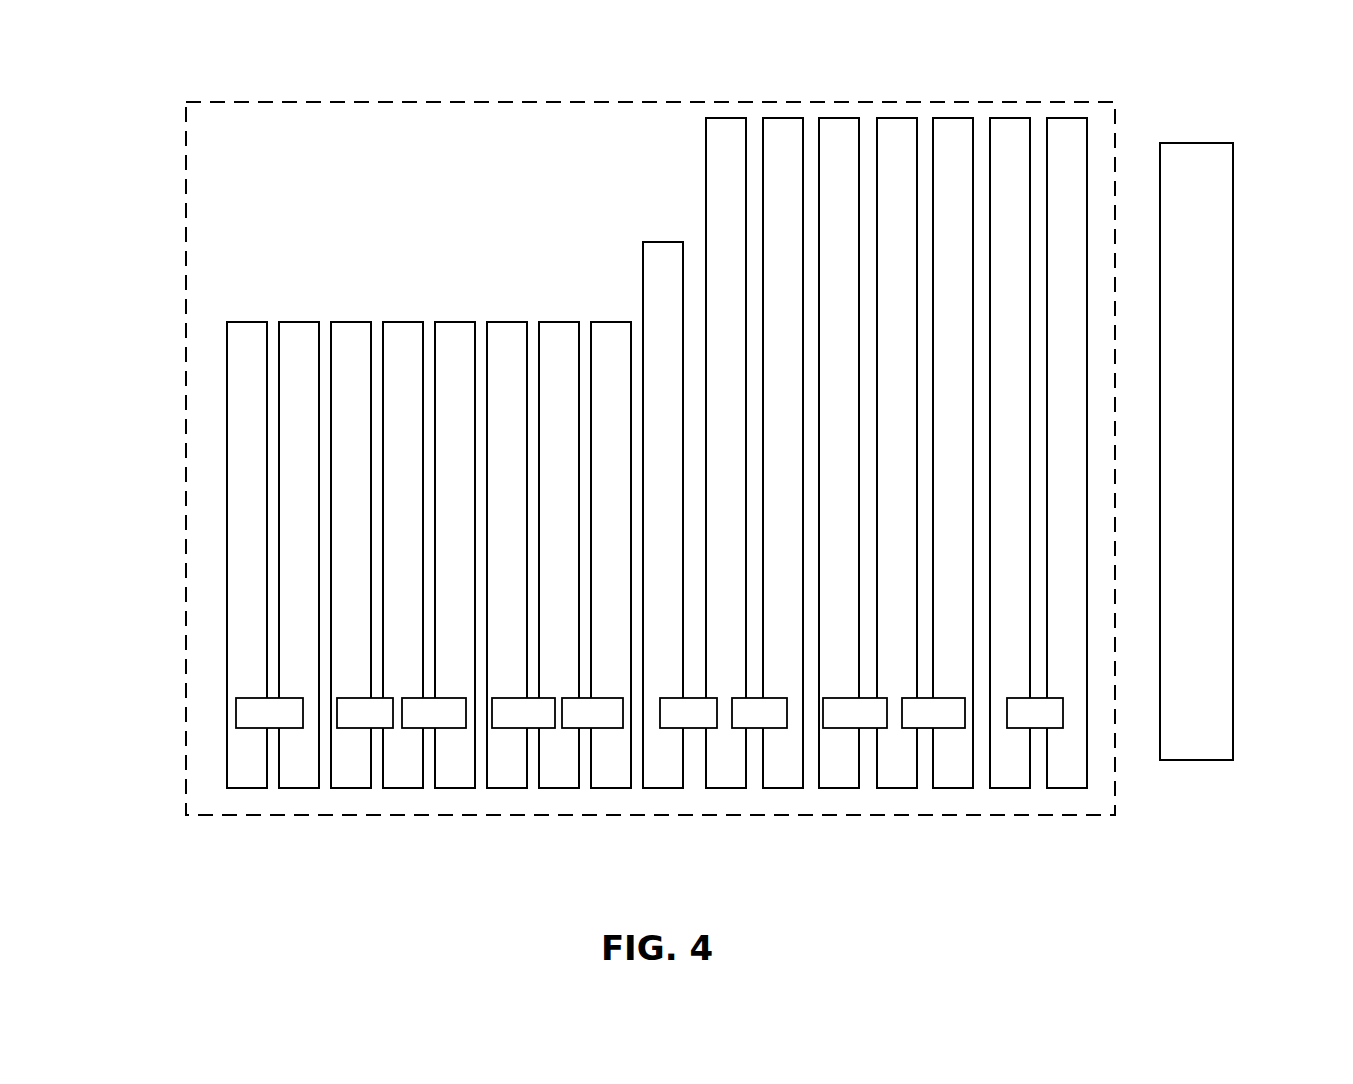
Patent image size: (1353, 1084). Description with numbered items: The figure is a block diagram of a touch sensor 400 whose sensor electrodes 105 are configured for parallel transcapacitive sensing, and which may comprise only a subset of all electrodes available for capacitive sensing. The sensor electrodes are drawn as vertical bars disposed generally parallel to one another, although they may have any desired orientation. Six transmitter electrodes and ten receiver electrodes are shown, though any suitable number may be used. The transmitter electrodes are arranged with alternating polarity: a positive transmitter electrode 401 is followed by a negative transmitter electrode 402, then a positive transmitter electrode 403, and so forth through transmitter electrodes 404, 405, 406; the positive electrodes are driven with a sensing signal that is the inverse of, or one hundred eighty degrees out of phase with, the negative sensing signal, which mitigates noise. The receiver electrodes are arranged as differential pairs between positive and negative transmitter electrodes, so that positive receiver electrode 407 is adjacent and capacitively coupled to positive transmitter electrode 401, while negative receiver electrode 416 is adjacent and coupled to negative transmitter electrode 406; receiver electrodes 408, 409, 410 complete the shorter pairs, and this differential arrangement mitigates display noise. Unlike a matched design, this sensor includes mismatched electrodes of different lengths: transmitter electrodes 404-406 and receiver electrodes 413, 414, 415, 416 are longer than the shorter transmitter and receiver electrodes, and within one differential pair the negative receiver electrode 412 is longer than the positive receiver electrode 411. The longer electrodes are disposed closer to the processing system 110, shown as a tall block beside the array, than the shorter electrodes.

The touch sensor 400 is at (137, 533).
The sensor electrodes 105 is at (1075, 102).
The processing system 110 is at (1233, 390).
The positive transmitter electrode 401 is at (243, 788).
The negative transmitter electrode 402 is at (398, 788).
The positive transmitter electrode 403 is at (555, 788).
The transmitter electrode 404 is at (722, 788).
The transmitter electrode 405 is at (893, 788).
The negative transmitter electrode 406 is at (1067, 788).
The positive receiver electrode 407 is at (303, 322).
The receiver electrode 408 is at (355, 322).
The receiver electrode 409 is at (458, 322).
The receiver electrode 410 is at (511, 322).
The positive receiver electrode 411 is at (615, 322).
The negative receiver electrode 412 is at (668, 242).
The receiver electrode 413 is at (787, 118).
The receiver electrode 414 is at (837, 118).
The receiver electrode 415 is at (953, 118).
The negative receiver electrode 416 is at (1005, 118).